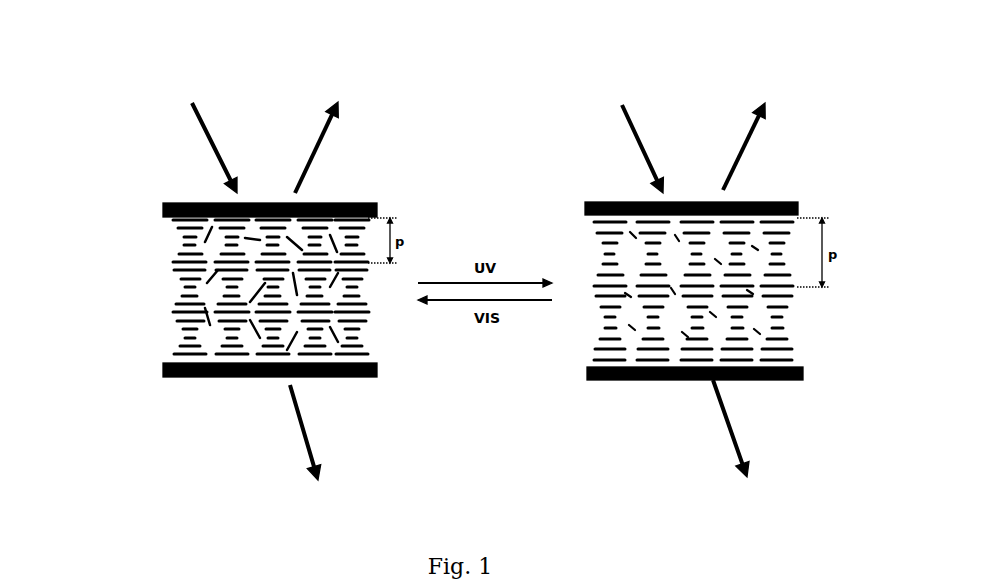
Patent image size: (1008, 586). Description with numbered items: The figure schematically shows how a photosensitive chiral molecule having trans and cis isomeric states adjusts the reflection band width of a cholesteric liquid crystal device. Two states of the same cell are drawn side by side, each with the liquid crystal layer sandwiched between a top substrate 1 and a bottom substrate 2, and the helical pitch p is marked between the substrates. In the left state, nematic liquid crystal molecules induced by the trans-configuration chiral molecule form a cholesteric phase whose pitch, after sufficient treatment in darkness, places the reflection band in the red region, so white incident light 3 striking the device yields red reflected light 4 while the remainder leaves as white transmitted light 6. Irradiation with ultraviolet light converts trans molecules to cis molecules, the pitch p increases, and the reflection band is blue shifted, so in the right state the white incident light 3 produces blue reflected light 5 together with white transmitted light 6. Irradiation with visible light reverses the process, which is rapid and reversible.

The top substrate 1 is at (168, 203).
The bottom substrate 2 is at (168, 370).
The white incident light 3 is at (622, 105).
The red reflected light 4 is at (338, 102).
The blue reflected light 5 is at (765, 103).
The white transmitted light 6 is at (735, 453).